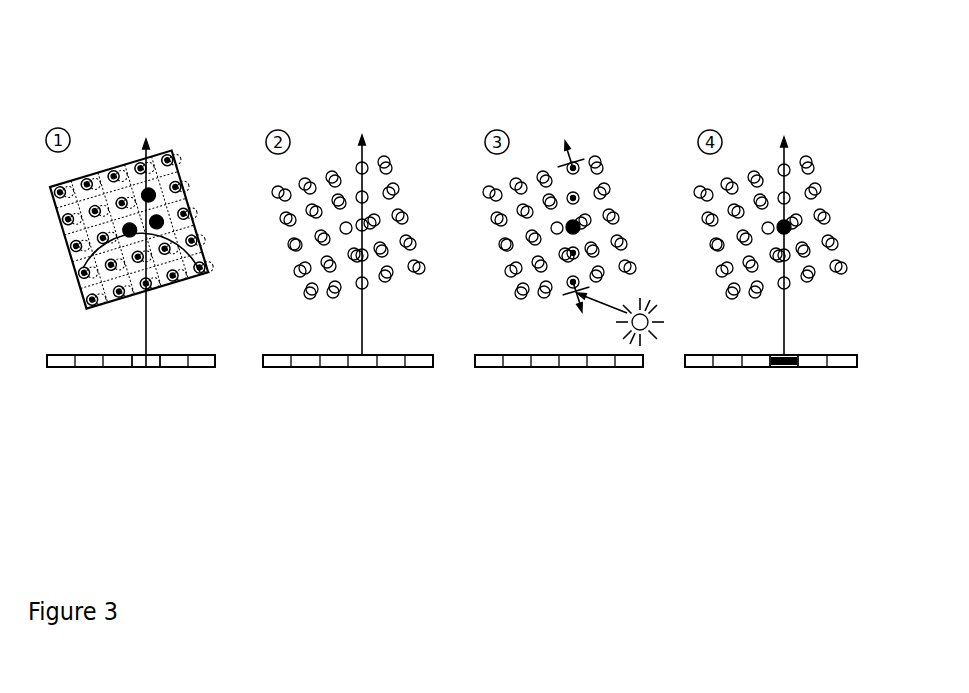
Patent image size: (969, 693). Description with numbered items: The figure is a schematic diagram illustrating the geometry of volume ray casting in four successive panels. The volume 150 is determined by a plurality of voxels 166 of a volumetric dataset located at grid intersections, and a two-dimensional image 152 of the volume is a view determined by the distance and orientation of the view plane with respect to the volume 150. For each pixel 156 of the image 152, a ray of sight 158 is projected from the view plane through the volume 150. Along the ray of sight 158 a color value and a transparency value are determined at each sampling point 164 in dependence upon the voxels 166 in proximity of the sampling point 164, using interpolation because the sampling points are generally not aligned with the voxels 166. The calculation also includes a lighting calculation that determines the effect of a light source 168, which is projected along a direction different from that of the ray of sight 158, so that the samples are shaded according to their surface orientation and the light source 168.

The volume 150 is at (167, 207).
The 2D image 152 is at (60, 367).
The pixel 156 is at (145, 367).
The ray of sight 158 is at (147, 139).
The sampling point 164 is at (362, 225).
The voxels 166 is at (83, 268).
The light source 168 is at (634, 336).